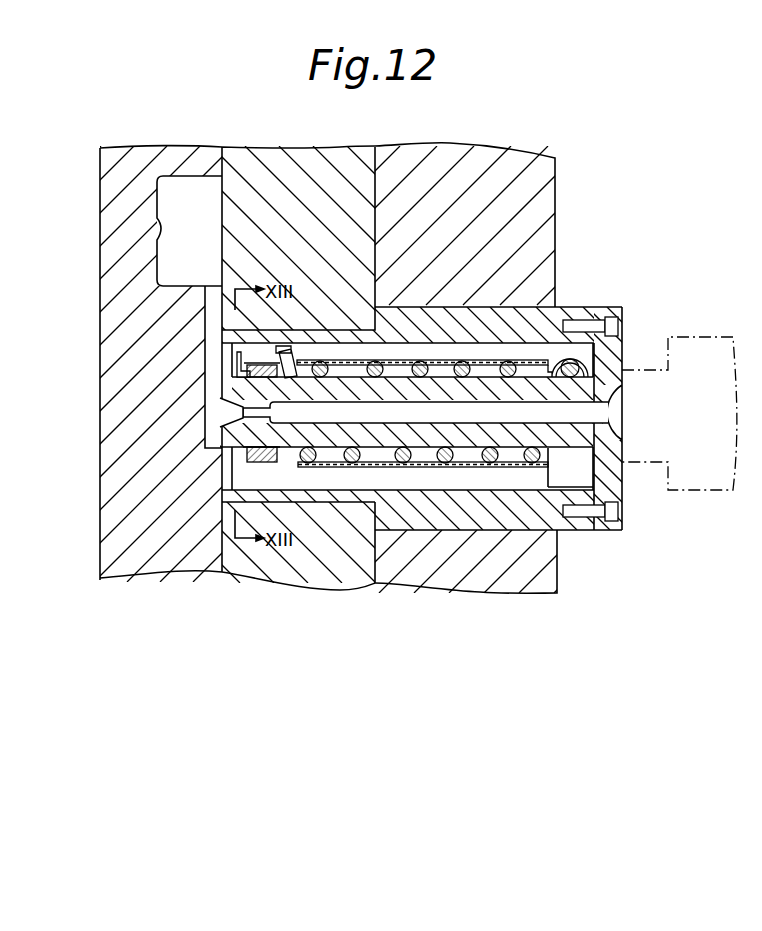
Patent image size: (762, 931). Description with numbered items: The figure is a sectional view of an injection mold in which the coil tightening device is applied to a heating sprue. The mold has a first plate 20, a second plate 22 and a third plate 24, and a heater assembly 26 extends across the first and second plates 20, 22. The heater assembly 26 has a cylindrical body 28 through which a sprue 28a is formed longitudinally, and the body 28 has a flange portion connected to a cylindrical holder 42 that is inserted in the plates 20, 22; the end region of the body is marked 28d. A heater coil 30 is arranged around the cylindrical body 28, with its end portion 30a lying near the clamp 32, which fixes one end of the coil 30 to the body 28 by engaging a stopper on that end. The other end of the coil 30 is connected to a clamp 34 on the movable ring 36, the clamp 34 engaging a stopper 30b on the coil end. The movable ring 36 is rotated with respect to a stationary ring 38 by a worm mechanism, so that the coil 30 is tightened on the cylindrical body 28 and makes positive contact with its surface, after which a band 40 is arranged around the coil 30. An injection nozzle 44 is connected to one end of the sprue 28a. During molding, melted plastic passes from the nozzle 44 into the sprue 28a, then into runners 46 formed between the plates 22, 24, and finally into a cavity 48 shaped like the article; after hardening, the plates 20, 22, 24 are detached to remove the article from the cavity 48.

The first plate 20 is at (538, 202).
The second plate 22 is at (265, 167).
The third plate 24 is at (110, 158).
The heater assembly 26 is at (510, 472).
The cylindrical body 28 is at (427, 428).
The sprue 28a is at (563, 417).
The cylinder end flange 28d is at (612, 533).
The heater coil 30 is at (407, 450).
The retainer end portion 30a is at (585, 376).
The stopper 30b is at (235, 358).
The clamp 32 is at (580, 361).
The clamp 34 is at (252, 370).
The movable ring 36 is at (262, 405).
The stationary ring 38 is at (250, 455).
The band 40 is at (364, 461).
The cylindrical holder 42 is at (538, 313).
The injection nozzle 44 is at (703, 347).
The runners 46 is at (228, 420).
The cavity 48 is at (189, 231).